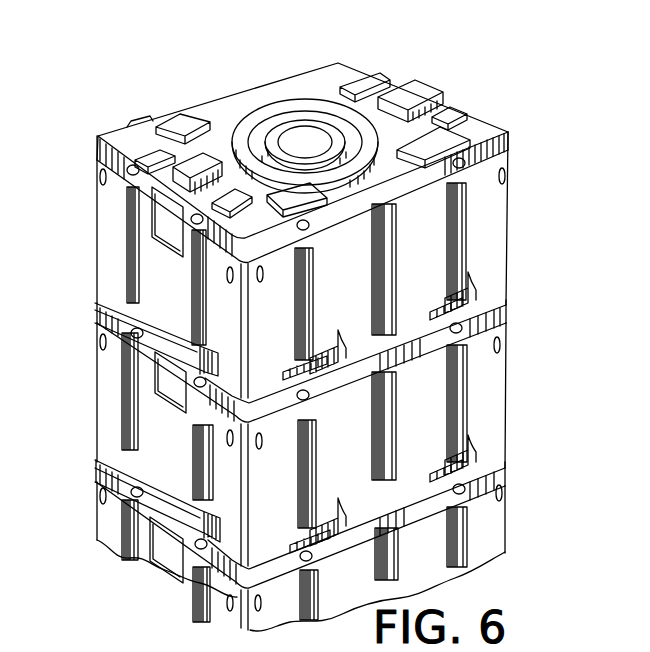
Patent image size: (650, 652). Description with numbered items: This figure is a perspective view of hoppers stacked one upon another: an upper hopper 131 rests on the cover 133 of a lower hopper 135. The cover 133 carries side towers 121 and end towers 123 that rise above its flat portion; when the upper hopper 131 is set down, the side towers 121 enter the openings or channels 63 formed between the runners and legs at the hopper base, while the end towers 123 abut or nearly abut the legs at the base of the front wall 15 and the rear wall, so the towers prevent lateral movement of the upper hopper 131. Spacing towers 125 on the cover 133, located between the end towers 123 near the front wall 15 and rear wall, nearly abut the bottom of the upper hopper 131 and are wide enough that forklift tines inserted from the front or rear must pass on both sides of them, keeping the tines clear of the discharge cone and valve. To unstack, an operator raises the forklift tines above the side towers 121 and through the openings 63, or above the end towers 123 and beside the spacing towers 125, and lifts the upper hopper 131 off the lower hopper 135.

The front wall 15 is at (167, 239).
The openings or channels 63 is at (326, 362).
The side towers 121 is at (185, 115).
The end towers 123 is at (367, 80).
The spacing towers 125 is at (420, 87).
The upper hopper 131 is at (518, 235).
The cover 133 is at (518, 307).
The lower hopper 135 is at (518, 393).